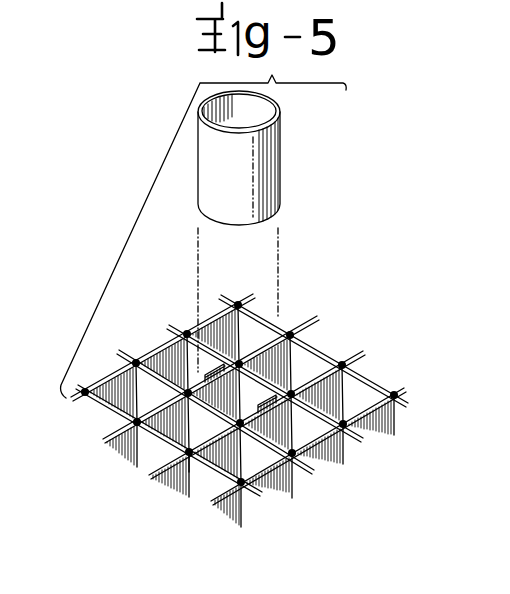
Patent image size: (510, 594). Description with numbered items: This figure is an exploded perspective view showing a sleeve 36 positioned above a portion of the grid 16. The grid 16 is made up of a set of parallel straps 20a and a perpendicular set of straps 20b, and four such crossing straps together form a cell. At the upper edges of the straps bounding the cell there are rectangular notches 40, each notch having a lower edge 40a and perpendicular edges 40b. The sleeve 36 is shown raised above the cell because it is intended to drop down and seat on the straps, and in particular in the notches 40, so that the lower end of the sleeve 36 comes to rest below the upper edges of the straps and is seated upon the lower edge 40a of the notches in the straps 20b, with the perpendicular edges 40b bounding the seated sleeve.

The grid 16 is at (252, 407).
The set of parallel straps 20a is at (353, 440).
The perpendicular set of straps 20b is at (310, 335).
The sleeve 36 is at (275, 157).
The rectangular notch 40 is at (213, 380).
The lower edge 40a is at (187, 457).
The perpendicular edge 40b is at (222, 423).